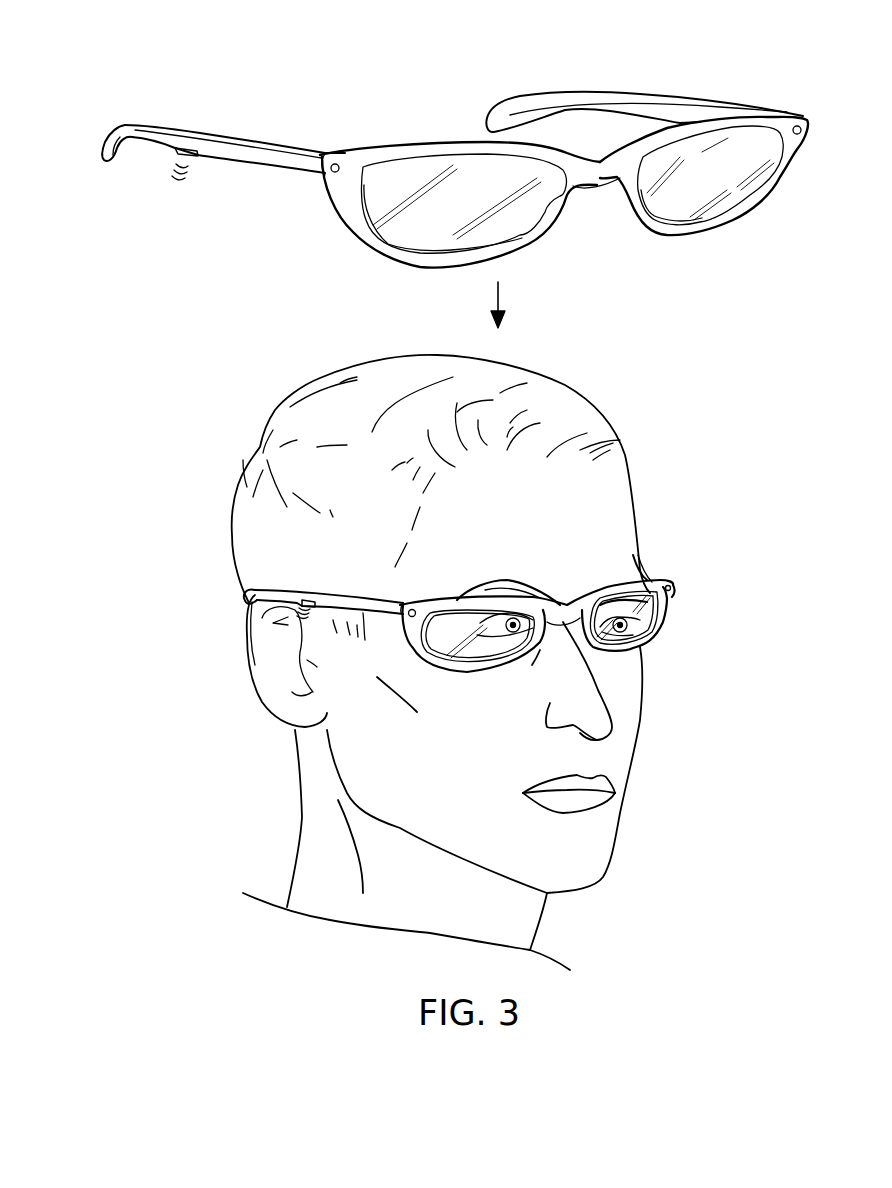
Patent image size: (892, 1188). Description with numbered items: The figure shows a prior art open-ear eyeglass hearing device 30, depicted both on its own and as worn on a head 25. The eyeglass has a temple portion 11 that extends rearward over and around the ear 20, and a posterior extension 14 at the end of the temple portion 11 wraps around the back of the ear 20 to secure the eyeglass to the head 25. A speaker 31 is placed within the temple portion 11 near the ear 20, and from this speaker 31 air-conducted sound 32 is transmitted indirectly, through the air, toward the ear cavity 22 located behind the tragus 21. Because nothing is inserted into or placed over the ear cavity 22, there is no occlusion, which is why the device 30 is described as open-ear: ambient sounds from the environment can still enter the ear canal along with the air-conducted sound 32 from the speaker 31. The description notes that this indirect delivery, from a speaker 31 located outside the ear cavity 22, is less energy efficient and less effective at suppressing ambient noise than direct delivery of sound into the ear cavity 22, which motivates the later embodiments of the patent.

The temple portion 11 is at (278, 143).
The posterior extension 14 is at (120, 125).
The ear 20 is at (278, 717).
The tragus 21 is at (258, 687).
The ear cavity 22 is at (307, 660).
The head 25 is at (572, 475).
The open-ear eyeglass hearing device 30 is at (595, 90).
The speaker 31 is at (190, 150).
The air-conducted sound 32 is at (173, 178).